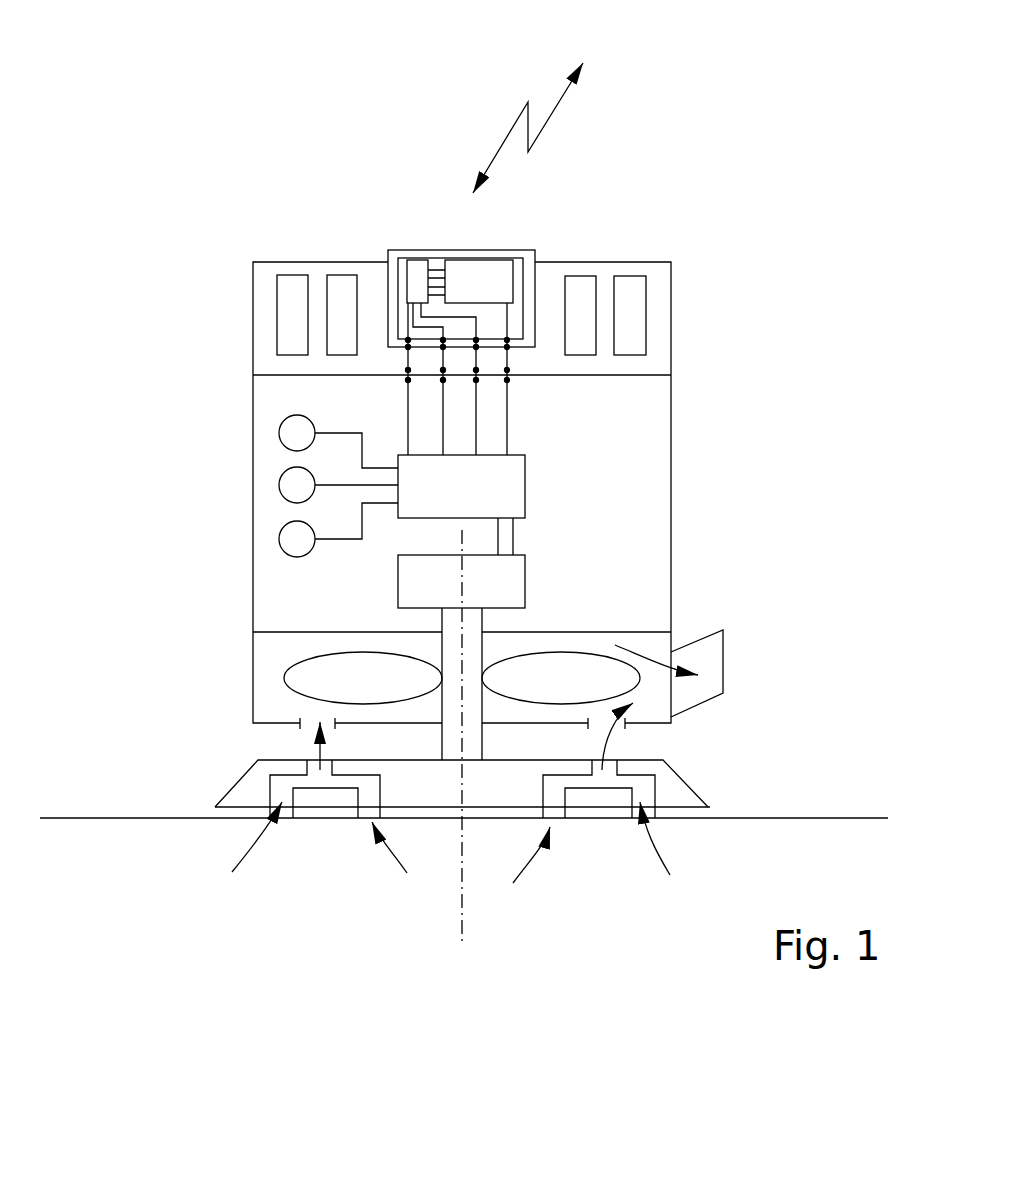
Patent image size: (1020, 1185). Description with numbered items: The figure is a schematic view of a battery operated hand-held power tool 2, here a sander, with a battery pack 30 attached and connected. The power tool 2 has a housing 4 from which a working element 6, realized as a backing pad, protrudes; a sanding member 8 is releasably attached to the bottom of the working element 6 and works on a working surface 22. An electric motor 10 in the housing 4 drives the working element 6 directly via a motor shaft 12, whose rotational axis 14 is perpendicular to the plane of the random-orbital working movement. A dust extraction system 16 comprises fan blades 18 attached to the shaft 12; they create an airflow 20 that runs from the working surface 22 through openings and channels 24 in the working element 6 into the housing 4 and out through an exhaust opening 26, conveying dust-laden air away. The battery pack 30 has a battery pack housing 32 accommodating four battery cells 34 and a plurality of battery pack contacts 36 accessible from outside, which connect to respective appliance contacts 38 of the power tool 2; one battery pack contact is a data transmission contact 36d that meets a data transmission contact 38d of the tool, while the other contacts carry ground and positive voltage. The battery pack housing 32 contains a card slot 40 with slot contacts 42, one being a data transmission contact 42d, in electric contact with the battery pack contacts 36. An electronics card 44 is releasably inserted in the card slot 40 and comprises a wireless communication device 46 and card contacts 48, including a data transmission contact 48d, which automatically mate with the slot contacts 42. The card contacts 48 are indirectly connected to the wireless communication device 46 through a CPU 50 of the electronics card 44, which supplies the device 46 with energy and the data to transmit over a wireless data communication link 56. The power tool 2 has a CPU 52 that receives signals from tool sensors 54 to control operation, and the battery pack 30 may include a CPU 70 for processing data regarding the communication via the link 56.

The hand-held power tool 2 is at (752, 132).
The housing 4 is at (672, 467).
The working element 6 is at (700, 782).
The sanding member 8 is at (690, 810).
The electric motor 10 is at (510, 594).
The motor shaft 12 is at (457, 648).
The rotational axis 14 is at (465, 942).
The dust extraction system 16 is at (687, 632).
The fan blades 18 is at (308, 678).
The airflow 20 is at (642, 650).
The working surface 22 is at (863, 815).
The openings and channels 24 is at (337, 782).
The exhaust opening 26 is at (717, 677).
The battery pack 30 is at (614, 243).
The battery pack housing 32 is at (672, 330).
The battery cells 34 is at (343, 295).
The battery pack contacts 36 is at (476, 370).
The data transmission contact of battery pack 36d is at (443, 370).
The appliance contacts 38 is at (476, 380).
The data transmission contact of power tool 38d is at (443, 380).
The card slot 40 is at (538, 288).
The slot contacts 42 is at (507, 347).
The data transmission contact of card slot 42d is at (407, 347).
The electronics card 44 is at (407, 252).
The wireless communication device 46 is at (477, 262).
The card contacts 48 is at (507, 340).
The data transmission contact of electronics card 48d is at (407, 338).
The central processing unit of electronics card 50 is at (423, 260).
The central processing unit of power tool 52 is at (508, 495).
The tool sensors 54 is at (283, 541).
The wireless data communication link 56 is at (553, 110).
The central processing unit of battery pack 70 is at (287, 283).